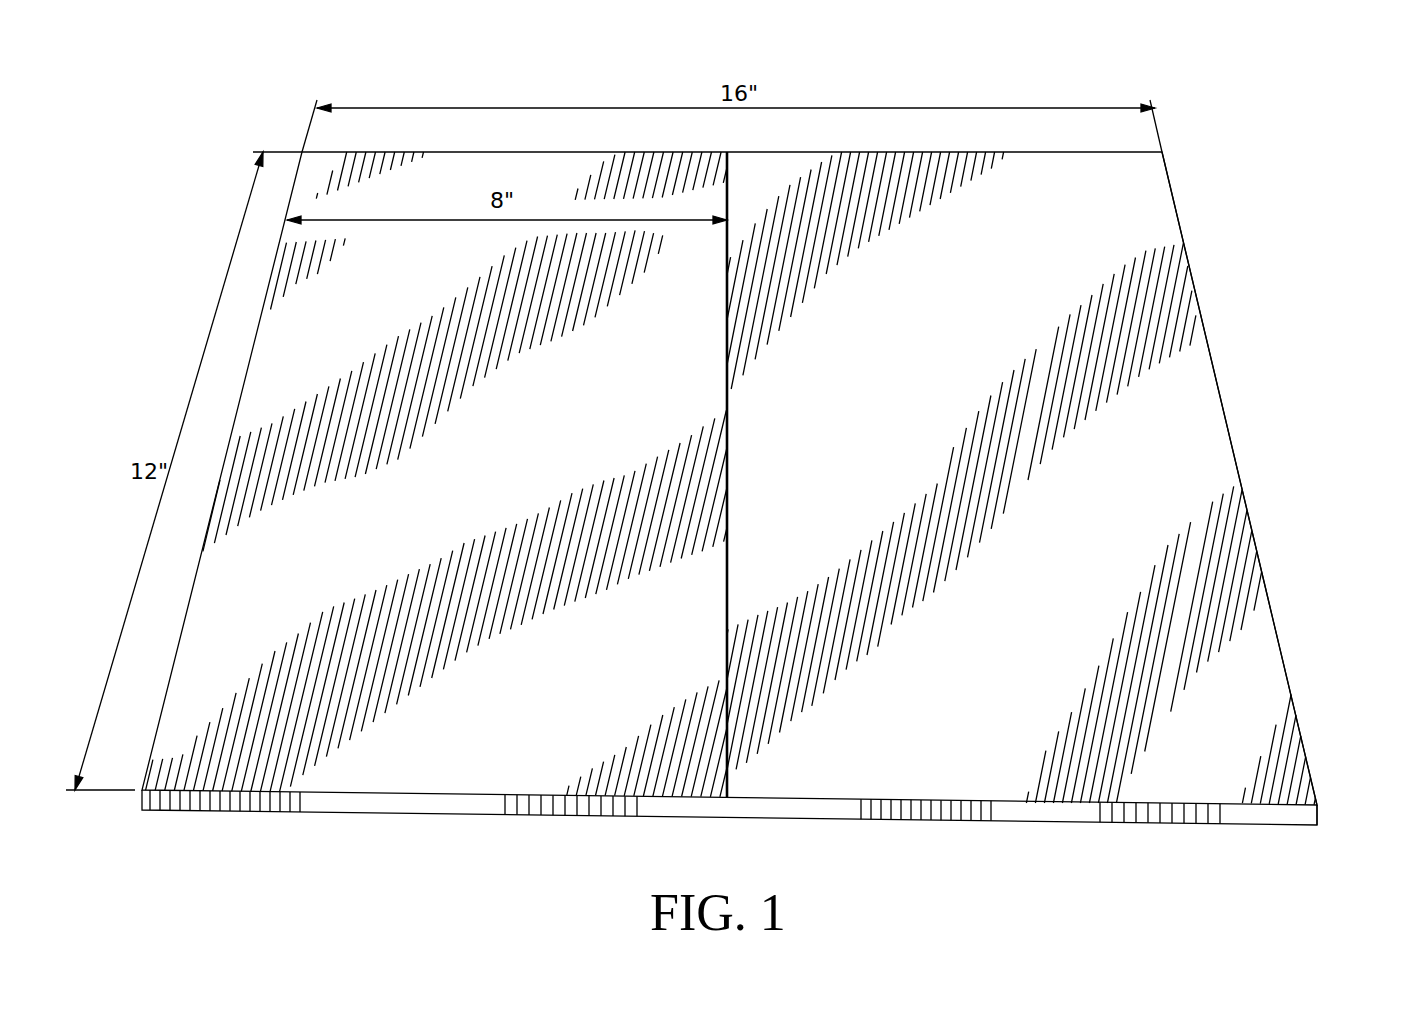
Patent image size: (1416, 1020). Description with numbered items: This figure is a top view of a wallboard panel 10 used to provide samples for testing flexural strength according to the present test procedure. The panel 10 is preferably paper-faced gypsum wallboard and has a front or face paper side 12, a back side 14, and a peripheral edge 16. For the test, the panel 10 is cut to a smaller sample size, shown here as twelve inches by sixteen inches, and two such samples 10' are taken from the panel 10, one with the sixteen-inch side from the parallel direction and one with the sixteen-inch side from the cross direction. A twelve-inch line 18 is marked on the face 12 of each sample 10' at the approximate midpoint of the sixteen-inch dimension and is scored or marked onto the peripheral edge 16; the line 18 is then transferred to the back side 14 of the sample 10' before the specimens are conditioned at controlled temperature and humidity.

The wallboard panel 10 is at (691, 430).
The sample 10' is at (1014, 270).
The face paper side 12 is at (939, 281).
The back side 14 is at (1120, 825).
The peripheral edge 16 is at (1320, 815).
The line 18 is at (727, 452).